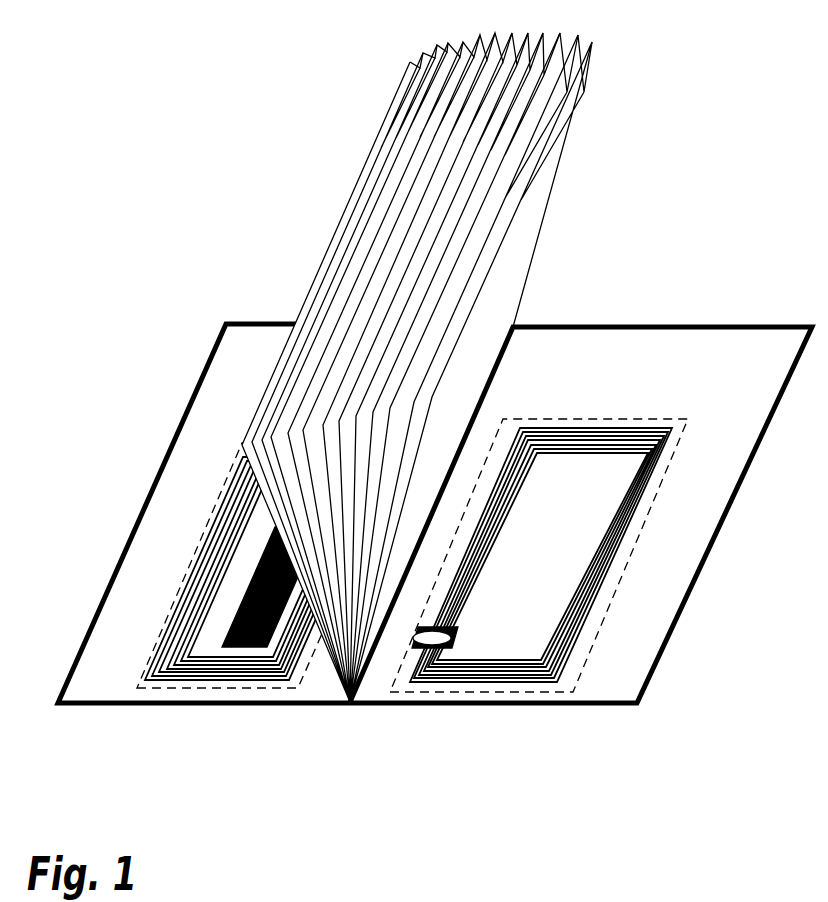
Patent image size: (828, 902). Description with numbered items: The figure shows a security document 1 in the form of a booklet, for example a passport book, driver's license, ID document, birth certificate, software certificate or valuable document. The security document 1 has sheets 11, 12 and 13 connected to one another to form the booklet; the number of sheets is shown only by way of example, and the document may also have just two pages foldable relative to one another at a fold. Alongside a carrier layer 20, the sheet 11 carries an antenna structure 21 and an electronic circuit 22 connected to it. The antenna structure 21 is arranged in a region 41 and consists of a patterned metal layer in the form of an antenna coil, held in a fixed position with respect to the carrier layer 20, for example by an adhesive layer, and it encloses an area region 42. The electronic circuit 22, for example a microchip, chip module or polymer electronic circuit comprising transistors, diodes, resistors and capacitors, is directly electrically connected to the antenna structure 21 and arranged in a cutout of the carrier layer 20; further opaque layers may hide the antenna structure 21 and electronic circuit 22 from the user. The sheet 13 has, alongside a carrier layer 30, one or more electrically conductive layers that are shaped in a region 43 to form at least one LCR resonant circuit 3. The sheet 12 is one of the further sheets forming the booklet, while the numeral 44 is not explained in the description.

The security document 1 is at (417, 421).
The LCR resonant circuit 3 is at (222, 692).
The sheet 11 is at (643, 325).
The sheet 12 is at (400, 77).
The sheet 13 is at (226, 324).
The carrier layer 20 is at (581, 480).
The antenna structure 21 is at (653, 475).
The electronic circuit 22 is at (460, 628).
The carrier layer 30 is at (214, 546).
The region 41 is at (688, 419).
The area region 42 is at (565, 463).
The region 43 is at (208, 528).
The chip module 44 is at (265, 512).